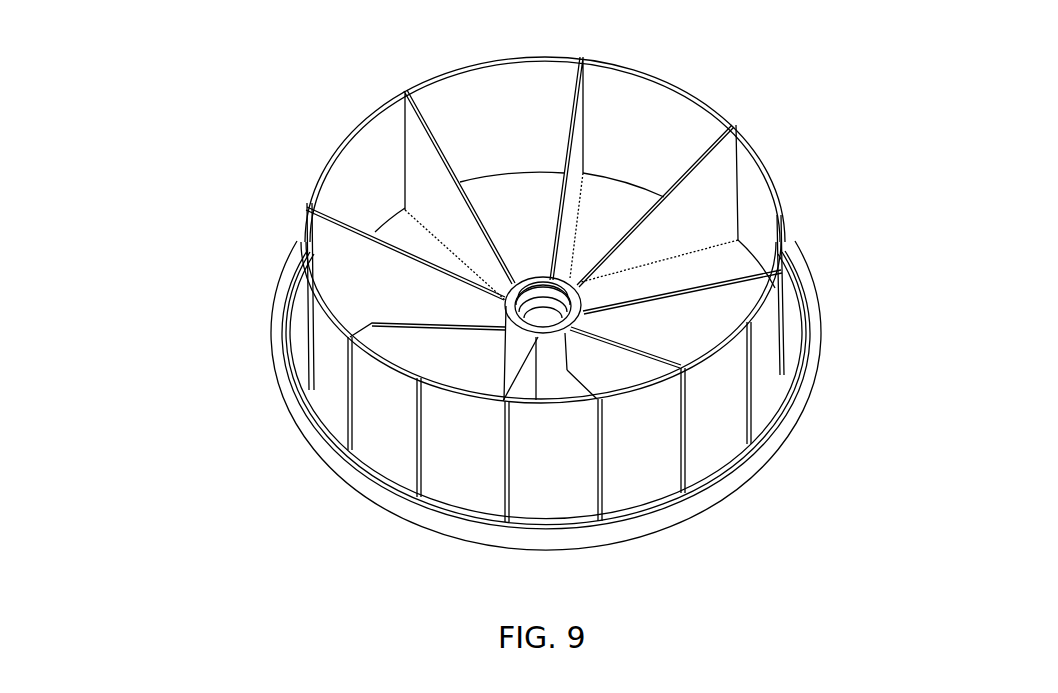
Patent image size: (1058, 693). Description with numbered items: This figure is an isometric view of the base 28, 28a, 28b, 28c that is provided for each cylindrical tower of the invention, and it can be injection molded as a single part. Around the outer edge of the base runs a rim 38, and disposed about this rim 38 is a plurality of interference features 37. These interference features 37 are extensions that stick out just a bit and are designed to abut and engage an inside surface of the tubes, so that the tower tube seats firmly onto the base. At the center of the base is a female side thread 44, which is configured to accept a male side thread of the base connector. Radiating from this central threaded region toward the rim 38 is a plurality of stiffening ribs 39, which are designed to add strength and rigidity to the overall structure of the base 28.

The base 28 is at (504, 294).
The base 28a is at (504, 294).
The base 28b is at (504, 294).
The base 28c is at (504, 294).
The interference features 37 is at (685, 450).
The rim 38 is at (768, 439).
The stiffening ribs 39 is at (368, 282).
The female side thread 44 is at (579, 302).